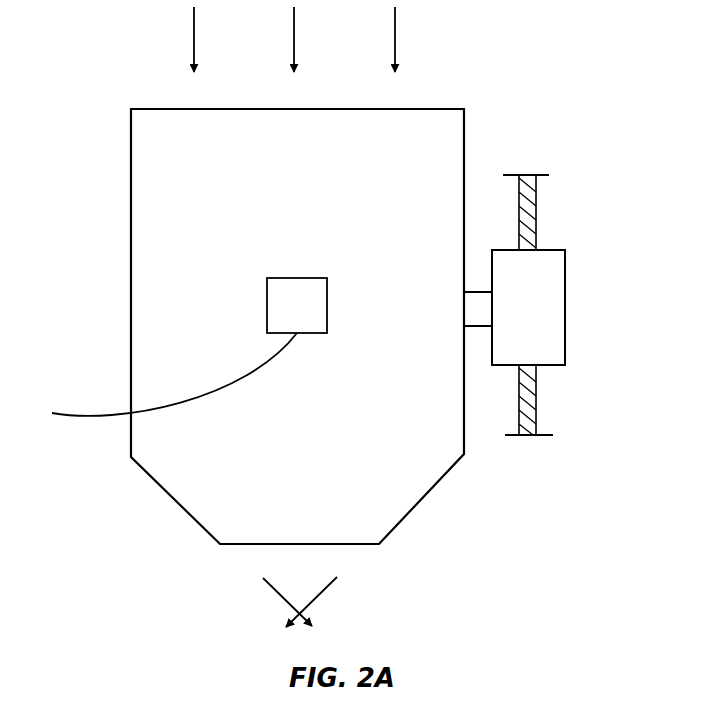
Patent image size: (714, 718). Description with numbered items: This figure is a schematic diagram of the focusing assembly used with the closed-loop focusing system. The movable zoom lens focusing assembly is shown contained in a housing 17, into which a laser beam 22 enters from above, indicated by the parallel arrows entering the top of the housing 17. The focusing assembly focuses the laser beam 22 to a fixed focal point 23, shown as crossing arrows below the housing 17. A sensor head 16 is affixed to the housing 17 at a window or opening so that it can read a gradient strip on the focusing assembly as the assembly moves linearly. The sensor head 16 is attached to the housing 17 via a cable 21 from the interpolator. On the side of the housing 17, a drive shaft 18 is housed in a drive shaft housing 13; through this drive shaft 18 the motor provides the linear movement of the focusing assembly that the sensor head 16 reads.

The drive shaft housing 13 is at (565, 306).
The sensor head 16 is at (297, 278).
The housing 17 is at (131, 277).
The drive shaft 18 is at (537, 221).
The cable 21 is at (76, 419).
The laser beam 22 is at (425, 1).
The fixed focal point 23 is at (326, 610).